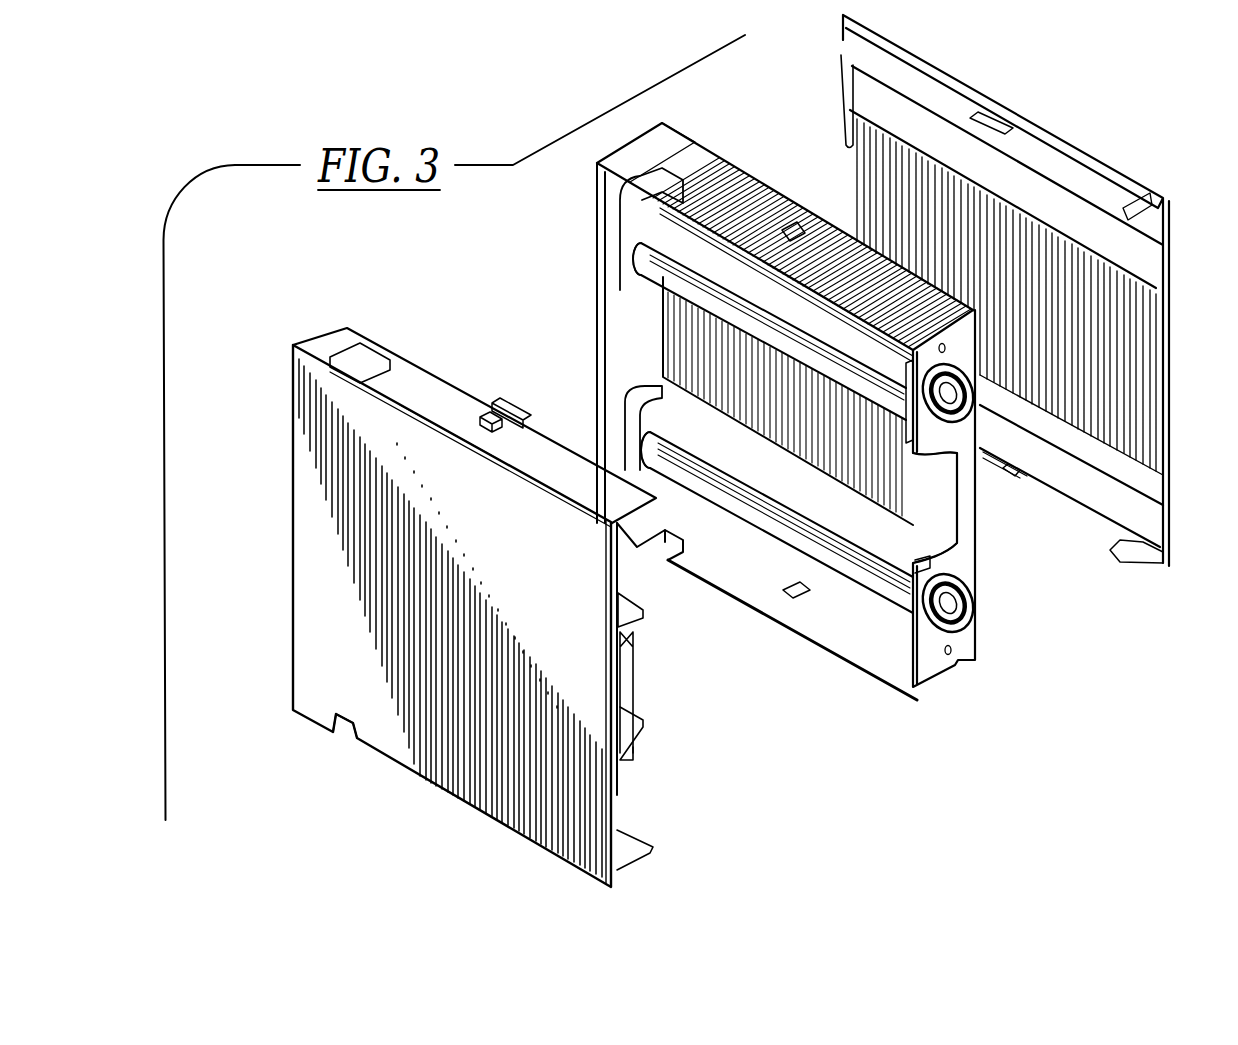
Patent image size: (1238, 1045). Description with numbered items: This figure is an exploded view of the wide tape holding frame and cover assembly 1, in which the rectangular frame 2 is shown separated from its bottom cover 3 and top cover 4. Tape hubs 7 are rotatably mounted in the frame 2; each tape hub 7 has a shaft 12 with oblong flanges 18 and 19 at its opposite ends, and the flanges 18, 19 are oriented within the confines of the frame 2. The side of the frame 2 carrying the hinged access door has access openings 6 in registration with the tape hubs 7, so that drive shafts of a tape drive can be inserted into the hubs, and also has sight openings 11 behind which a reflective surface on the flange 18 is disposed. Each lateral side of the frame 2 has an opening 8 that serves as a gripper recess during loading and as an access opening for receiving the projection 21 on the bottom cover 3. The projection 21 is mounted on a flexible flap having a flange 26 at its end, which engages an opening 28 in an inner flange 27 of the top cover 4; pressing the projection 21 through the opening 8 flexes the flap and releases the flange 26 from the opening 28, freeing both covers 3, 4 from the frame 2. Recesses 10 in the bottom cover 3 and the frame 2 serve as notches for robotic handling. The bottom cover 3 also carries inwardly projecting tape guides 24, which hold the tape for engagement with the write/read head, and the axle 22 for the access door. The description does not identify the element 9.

The wide tape holding frame and cover assembly 1 is at (428, 250).
The rectangular frame 2 is at (613, 365).
The bottom cover 3 is at (312, 652).
The top cover 4 is at (1172, 322).
The access openings 6 is at (970, 405).
The tape hubs 7 is at (837, 363).
The opening 8 is at (790, 230).
The top rail 9 is at (833, 218).
The recesses 10 is at (340, 373).
The sight openings 11 is at (948, 343).
The shaft 12 is at (710, 248).
The flange 18 is at (905, 440).
The flange 19 is at (640, 203).
The projection 21 is at (447, 437).
The axle 22 is at (627, 678).
The tape guides 24 is at (627, 603).
The flange 26 is at (515, 412).
The inner flange 27 is at (827, 33).
The opening 28 is at (990, 110).